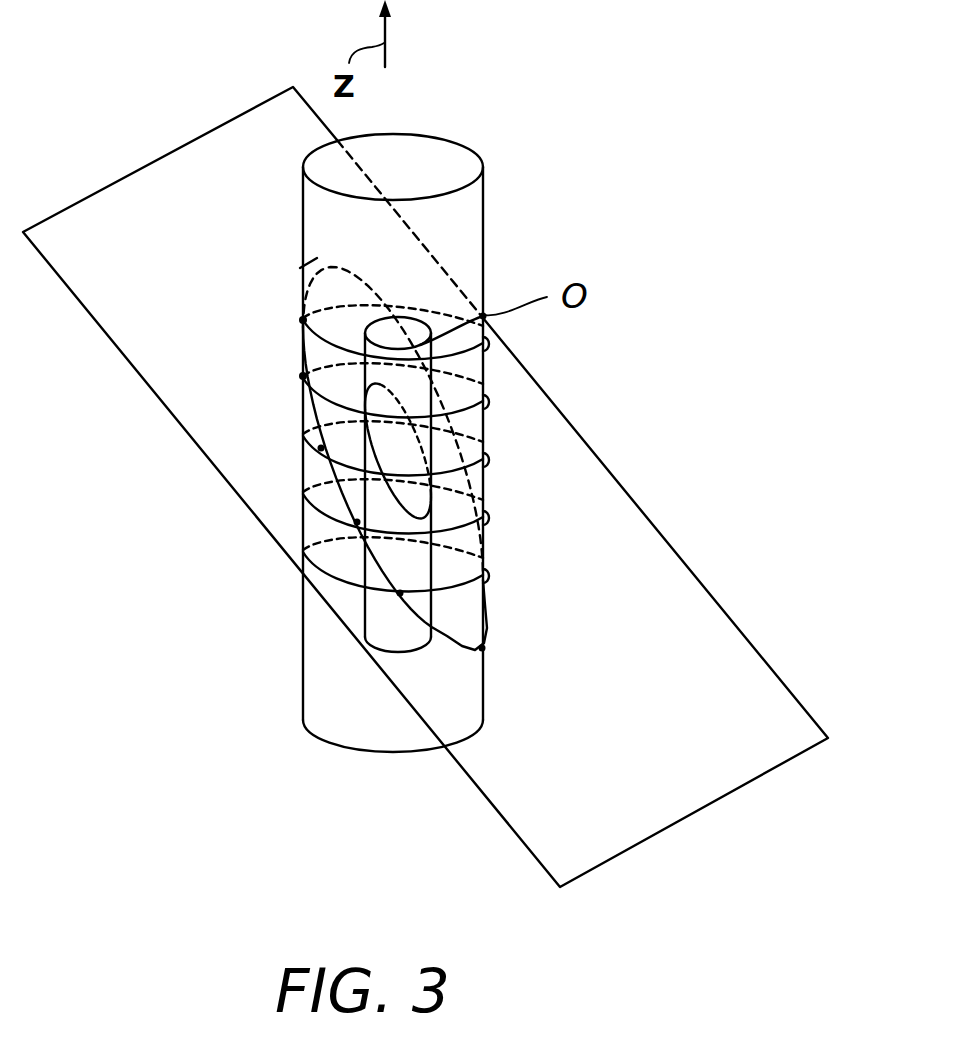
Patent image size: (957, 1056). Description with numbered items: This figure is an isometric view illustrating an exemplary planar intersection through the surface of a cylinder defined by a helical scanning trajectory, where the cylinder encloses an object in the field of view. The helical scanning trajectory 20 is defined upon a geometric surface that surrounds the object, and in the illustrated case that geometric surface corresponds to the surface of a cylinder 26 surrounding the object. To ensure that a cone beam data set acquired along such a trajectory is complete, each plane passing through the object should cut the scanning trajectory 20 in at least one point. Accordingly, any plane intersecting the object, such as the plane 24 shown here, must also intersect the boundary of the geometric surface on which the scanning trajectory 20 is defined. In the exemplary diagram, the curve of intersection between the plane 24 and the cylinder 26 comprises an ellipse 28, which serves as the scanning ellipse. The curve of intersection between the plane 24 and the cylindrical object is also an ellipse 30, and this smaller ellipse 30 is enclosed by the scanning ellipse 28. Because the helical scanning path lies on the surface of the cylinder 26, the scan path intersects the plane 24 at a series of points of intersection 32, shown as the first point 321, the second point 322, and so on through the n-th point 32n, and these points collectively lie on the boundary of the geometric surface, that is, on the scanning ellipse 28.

The scanning trajectory 20 is at (407, 653).
The plane 24 is at (750, 673).
The cylinder 26 is at (490, 236).
The ellipse 28 is at (305, 597).
The ellipse 30 is at (390, 449).
The points of intersection 32 is at (406, 484).
The point of intersection 321 is at (300, 318).
The point of intersection 322 is at (300, 376).
The point of intersection 32n is at (483, 650).